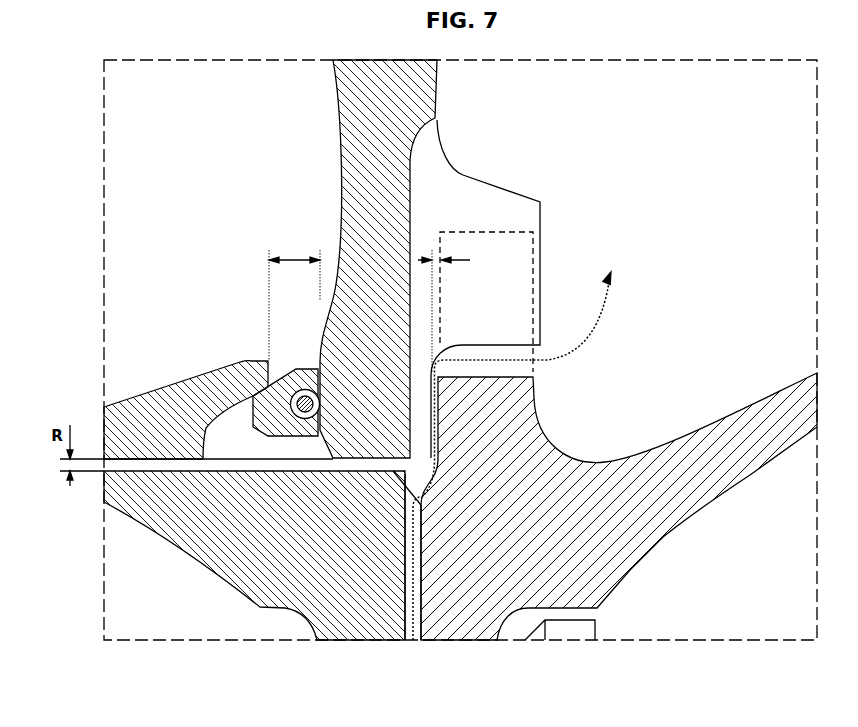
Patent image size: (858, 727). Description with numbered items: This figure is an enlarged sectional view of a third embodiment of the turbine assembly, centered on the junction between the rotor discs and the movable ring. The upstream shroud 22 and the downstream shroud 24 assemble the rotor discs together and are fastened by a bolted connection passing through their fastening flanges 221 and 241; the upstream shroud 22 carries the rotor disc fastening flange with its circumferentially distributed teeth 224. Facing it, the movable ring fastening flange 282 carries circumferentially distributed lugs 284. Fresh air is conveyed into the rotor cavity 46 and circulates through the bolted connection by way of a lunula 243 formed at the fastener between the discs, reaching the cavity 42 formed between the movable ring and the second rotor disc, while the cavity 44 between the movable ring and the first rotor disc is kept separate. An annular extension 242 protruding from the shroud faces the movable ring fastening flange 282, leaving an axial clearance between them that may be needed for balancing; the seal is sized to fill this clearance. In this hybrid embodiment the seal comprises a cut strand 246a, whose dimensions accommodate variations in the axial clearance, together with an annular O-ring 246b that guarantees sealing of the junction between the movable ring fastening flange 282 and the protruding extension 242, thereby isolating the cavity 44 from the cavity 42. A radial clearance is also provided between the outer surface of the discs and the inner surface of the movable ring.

The upstream shroud 22 is at (697, 465).
The downstream shroud 24 is at (218, 514).
The cavity 42 is at (635, 223).
The cavity 44 is at (240, 223).
The rotor cavity 46 is at (135, 606).
The fastening flange 221 is at (448, 637).
The teeth 224 is at (532, 369).
The fastening flange 241 is at (340, 639).
The annular extension 242 is at (226, 385).
The lunula 243 is at (412, 641).
The cut strand 246a is at (292, 390).
The annular O-ring 246b is at (304, 395).
The movable ring fastening flange 282 is at (360, 268).
The lugs 284 is at (482, 212).